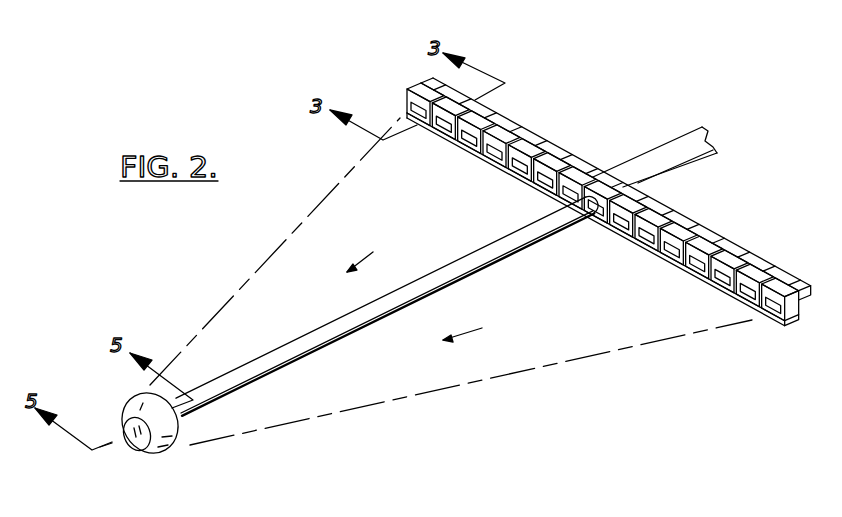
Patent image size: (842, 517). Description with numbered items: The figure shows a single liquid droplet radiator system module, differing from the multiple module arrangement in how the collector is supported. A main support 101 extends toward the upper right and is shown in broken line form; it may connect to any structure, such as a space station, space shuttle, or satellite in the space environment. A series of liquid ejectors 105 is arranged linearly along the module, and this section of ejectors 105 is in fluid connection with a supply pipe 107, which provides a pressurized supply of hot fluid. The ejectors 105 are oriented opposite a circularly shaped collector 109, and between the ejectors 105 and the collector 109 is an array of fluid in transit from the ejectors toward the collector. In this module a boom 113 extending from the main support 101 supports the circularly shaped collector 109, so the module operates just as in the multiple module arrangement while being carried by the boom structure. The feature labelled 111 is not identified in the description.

The main support 101 is at (683, 131).
The liquid ejectors 105 is at (476, 98).
The supply pipe 107 is at (773, 265).
The circularly shaped collector 109 is at (160, 452).
The spray pattern boundary 111 is at (530, 357).
The boom 113 is at (328, 343).